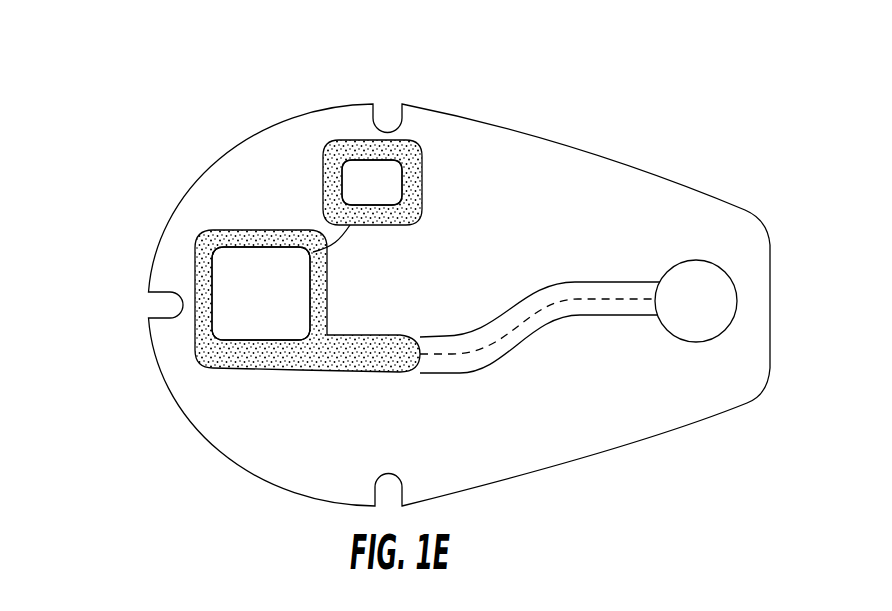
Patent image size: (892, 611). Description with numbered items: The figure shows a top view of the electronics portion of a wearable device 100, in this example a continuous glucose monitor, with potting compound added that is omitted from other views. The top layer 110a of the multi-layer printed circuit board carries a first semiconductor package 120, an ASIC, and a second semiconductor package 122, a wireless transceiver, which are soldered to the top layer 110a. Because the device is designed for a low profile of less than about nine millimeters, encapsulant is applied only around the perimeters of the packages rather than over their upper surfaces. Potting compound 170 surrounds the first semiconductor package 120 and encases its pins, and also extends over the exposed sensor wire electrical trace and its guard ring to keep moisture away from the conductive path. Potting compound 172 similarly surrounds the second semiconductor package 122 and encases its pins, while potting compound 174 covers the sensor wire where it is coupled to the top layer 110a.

The wearable device 100 is at (441, 295).
The top layer of the PCB 110a is at (278, 199).
The first semiconductor package 120 is at (278, 307).
The second semiconductor package 122 is at (390, 195).
The potting compound 170 is at (288, 369).
The potting compound 172 is at (422, 198).
The potting compound 174 is at (670, 268).